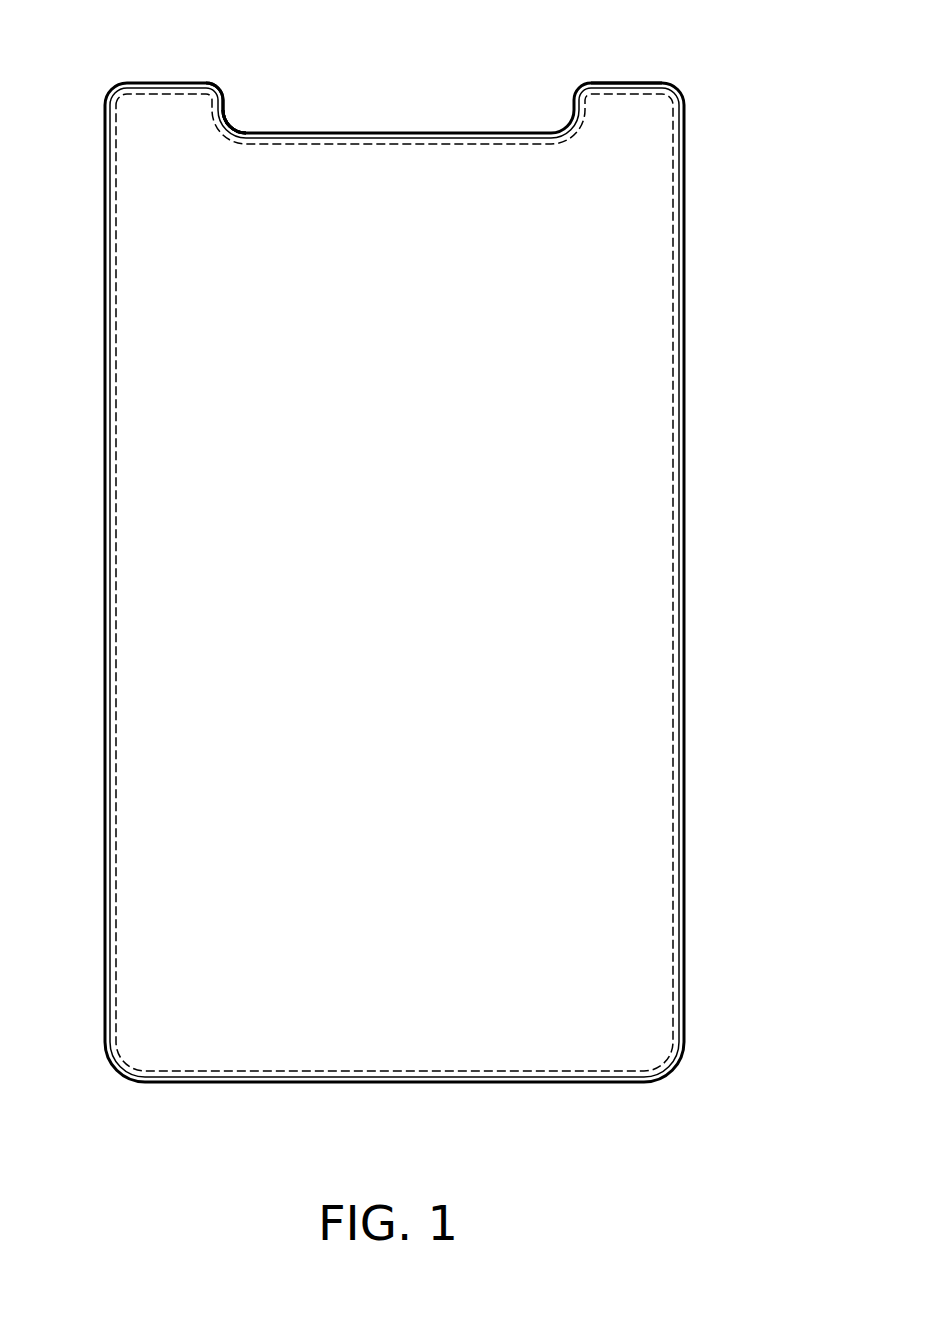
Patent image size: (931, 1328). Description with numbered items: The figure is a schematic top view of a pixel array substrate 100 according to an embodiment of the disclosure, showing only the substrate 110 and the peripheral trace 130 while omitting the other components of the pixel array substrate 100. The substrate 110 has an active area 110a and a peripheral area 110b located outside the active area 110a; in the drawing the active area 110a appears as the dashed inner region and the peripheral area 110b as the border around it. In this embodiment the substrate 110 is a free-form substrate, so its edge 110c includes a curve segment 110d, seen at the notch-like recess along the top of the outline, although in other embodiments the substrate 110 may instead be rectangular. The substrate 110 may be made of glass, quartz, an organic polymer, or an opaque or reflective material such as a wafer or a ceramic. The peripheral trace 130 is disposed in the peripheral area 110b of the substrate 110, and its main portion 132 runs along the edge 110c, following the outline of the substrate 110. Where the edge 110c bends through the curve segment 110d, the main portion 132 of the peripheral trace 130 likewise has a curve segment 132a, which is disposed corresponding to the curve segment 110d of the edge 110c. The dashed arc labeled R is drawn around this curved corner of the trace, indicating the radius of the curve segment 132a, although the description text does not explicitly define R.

The pixel array substrate 100 is at (434, 572).
The substrate 110 is at (675, 95).
The active area 110a is at (675, 155).
The peripheral area 110b is at (609, 86).
The edge 110c is at (320, 71).
The curve segment 110d is at (235, 122).
The peripheral trace 130 is at (168, 74).
The main portion 132 is at (168, 74).
The curve segment 132a is at (222, 135).
The radius of rounded corner R is at (227, 145).